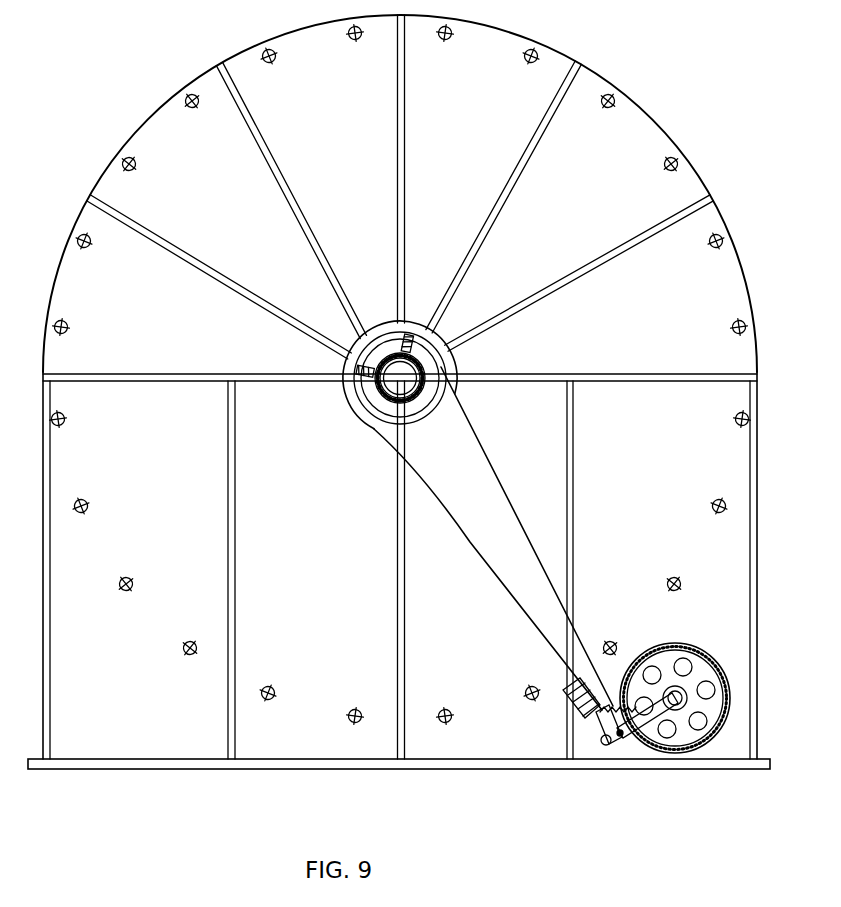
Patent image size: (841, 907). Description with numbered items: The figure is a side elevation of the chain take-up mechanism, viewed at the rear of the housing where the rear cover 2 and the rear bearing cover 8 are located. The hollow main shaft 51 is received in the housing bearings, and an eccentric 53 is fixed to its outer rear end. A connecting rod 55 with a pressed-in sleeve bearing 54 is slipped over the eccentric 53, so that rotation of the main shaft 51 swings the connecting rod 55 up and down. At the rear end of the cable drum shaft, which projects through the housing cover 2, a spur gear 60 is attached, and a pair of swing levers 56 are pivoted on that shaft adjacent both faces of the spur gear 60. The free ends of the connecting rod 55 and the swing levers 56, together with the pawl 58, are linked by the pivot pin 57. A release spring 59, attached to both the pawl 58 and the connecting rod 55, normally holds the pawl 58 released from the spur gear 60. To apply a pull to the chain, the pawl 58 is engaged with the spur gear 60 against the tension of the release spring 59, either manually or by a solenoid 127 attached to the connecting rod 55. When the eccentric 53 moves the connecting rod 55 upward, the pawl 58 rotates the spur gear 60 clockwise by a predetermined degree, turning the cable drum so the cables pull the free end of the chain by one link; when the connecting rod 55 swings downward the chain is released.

The rear cover 2 is at (637, 126).
The rear bearing cover 8 is at (447, 327).
The main shaft 51 is at (420, 400).
The eccentric 53 is at (369, 342).
The sleeve bearing 54 is at (391, 345).
The connecting rod 55 is at (512, 567).
The swing levers 56 is at (618, 742).
The pivot pin 57 is at (615, 746).
The pawl 58 is at (606, 745).
The release spring 59 is at (615, 697).
The spur gear 60 is at (688, 644).
The solenoid 127 is at (578, 710).